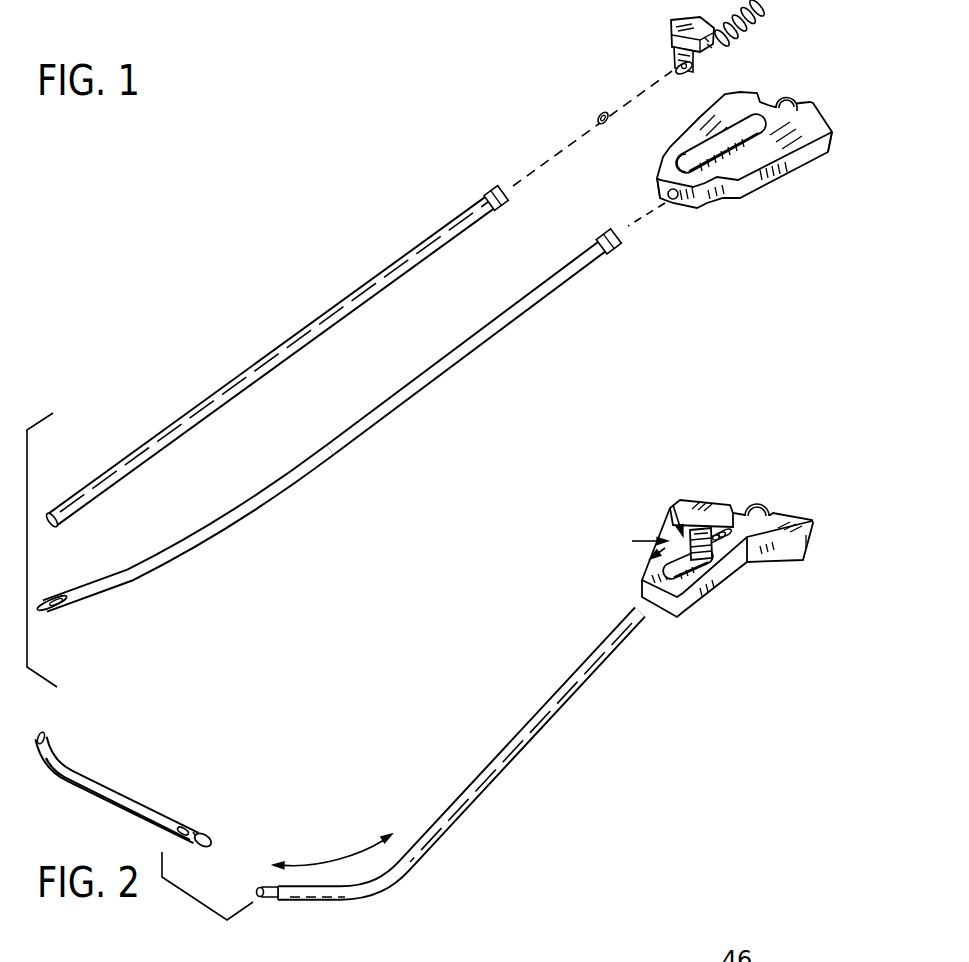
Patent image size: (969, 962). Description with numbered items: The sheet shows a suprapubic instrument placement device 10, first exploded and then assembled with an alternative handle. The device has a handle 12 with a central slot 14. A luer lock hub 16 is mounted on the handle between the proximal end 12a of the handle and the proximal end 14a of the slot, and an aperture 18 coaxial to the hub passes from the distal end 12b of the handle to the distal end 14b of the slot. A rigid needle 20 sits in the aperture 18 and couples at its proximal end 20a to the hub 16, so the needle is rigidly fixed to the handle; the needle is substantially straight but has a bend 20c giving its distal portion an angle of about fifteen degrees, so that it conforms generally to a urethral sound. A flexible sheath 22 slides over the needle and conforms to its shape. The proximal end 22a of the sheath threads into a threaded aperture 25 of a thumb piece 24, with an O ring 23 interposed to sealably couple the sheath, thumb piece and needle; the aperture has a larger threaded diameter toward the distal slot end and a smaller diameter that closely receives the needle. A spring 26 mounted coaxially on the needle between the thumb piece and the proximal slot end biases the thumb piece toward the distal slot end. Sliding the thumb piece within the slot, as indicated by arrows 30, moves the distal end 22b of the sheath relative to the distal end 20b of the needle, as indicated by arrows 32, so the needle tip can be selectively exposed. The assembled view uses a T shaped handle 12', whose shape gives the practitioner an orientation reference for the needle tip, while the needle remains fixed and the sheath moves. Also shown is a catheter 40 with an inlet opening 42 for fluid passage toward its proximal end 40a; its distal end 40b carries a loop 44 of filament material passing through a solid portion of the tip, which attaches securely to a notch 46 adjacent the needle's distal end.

In FIG. 1, the suprapubic instrument placement device 10 is at (239, 285).
In FIG. 1, the handle 12 is at (716, 167).
In FIG. 2, the T shaped handle 12' is at (737, 535).
In FIG. 1, the proximal end of the handle 12a is at (833, 138).
In FIG. 1, the distal end of the handle 12b is at (665, 193).
In FIG. 2, the central slot 14 is at (700, 560).
In FIG. 1, the proximal end of the slot 14a is at (752, 118).
In FIG. 1, the distal end of the slot 14b is at (678, 164).
In FIG. 1, the luer lock hub 16 is at (789, 94).
In FIG. 2, the luer lock hub 16 is at (757, 510).
In FIG. 1, the aperture 18 is at (674, 201).
In FIG. 1, the rigid needle 20 is at (484, 354).
In FIG. 1, the proximal end of the needle 20a is at (624, 250).
In FIG. 1, the distal end of the needle 20b is at (47, 612).
In FIG. 2, the distal end of the needle 20b is at (259, 896).
In FIG. 1, the bend 20c is at (203, 546).
In FIG. 1, the flexible sheath 22 is at (229, 379).
In FIG. 2, the flexible sheath 22 is at (560, 726).
In FIG. 1, the proximal end of the sheath 22a is at (496, 186).
In FIG. 1, the distal end of the sheath 22b is at (53, 514).
In FIG. 2, the distal end of the sheath 22b is at (284, 902).
In FIG. 1, the O ring 23 is at (597, 114).
In FIG. 1, the thumb piece 24 is at (658, 60).
In FIG. 2, the thumb piece 24 is at (700, 530).
In FIG. 1, the threaded aperture 25 is at (679, 68).
In FIG. 1, the spring 26 is at (760, 32).
In FIG. 2, the spring 26 is at (722, 527).
In FIG. 2, the arrows 30 is at (640, 532).
In FIG. 2, the arrows 32 is at (338, 855).
In FIG. 2, the catheter 40 is at (148, 788).
In FIG. 2, the proximal end of the catheter 40a is at (47, 737).
In FIG. 2, the distal end of the catheter 40b is at (198, 831).
In FIG. 2, the inlet opening 42 is at (175, 835).
In FIG. 2, the loop 44 is at (204, 847).
In FIG. 2, the notch 46 is at (262, 870).